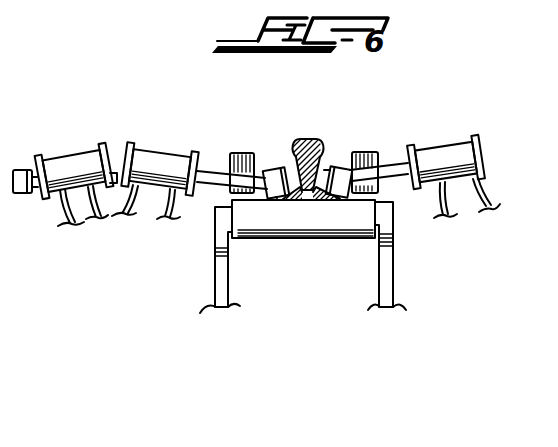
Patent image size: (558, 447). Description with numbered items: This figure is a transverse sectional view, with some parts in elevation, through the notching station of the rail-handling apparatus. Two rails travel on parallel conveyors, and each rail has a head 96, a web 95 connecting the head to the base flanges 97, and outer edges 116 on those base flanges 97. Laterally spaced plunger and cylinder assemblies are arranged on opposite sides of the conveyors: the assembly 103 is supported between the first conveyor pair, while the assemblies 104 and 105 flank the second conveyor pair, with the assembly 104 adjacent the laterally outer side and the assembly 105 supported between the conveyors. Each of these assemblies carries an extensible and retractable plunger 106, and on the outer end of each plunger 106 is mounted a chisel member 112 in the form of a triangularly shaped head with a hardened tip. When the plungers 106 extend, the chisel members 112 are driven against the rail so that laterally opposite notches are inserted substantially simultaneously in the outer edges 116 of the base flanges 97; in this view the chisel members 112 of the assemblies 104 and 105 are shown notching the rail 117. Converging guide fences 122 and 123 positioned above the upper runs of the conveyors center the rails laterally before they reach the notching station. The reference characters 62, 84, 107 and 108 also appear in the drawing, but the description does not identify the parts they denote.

The frame member 62 is at (6, 345).
The carriage 84 is at (6, 272).
The web 95 is at (330, 168).
The head 96 is at (312, 152).
The base flanges 97 is at (322, 197).
The plunger and cylinder assembly 103 is at (76, 165).
The plunger and cylinder assembly 104 is at (462, 133).
The plunger and cylinder assembly 105 is at (175, 146).
The plunger 106 is at (394, 168).
The spool spindle 107 is at (40, 157).
The left support arm 108 is at (214, 176).
The chisel member 112 is at (27, 170).
The outer edges 116 is at (276, 198).
The rail 117 is at (301, 132).
The guide fence 122 is at (243, 153).
The guide fence 123 is at (377, 152).